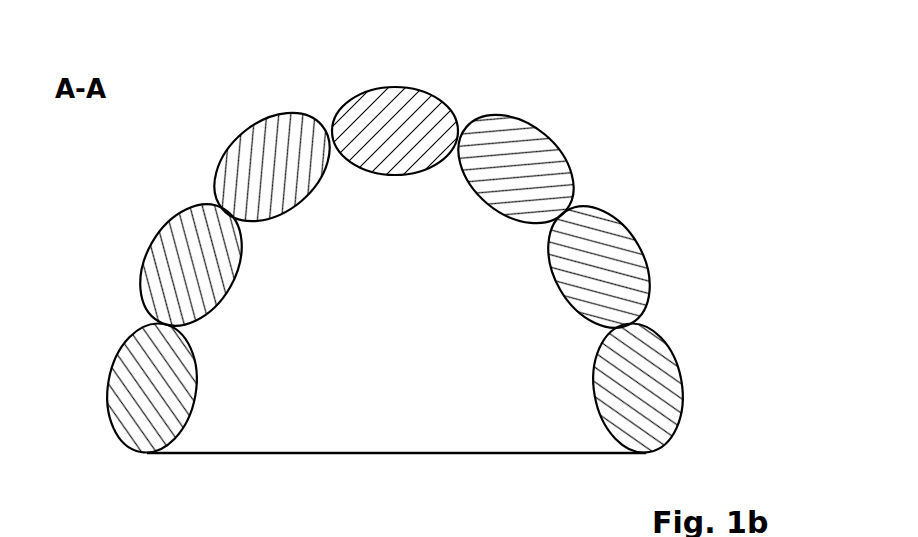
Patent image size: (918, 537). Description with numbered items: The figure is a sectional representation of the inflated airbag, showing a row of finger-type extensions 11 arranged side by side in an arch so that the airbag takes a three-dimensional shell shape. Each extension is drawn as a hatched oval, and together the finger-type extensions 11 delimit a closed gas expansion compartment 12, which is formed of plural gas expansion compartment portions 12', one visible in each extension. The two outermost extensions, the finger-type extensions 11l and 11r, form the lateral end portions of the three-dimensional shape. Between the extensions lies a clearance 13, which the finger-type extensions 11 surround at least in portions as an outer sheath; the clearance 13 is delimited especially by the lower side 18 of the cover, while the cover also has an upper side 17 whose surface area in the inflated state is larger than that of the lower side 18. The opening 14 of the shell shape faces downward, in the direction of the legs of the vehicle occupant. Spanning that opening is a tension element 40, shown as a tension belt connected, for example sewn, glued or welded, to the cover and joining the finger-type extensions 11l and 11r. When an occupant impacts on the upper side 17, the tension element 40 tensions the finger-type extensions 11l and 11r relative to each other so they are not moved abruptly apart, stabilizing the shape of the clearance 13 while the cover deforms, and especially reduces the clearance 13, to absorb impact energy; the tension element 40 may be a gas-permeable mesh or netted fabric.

The finger-type extensions 11 is at (258, 126).
The right finger-type extension 11r is at (110, 418).
The left finger-type extension 11l is at (680, 417).
The gas expansion compartment 12 is at (193, 107).
The gas expansion compartment portions 12' is at (395, 255).
The clearance 13 is at (453, 413).
The opening 14 is at (292, 466).
The upper side 17 is at (418, 88).
The lower side 18 is at (393, 176).
The tension element 40 is at (394, 454).